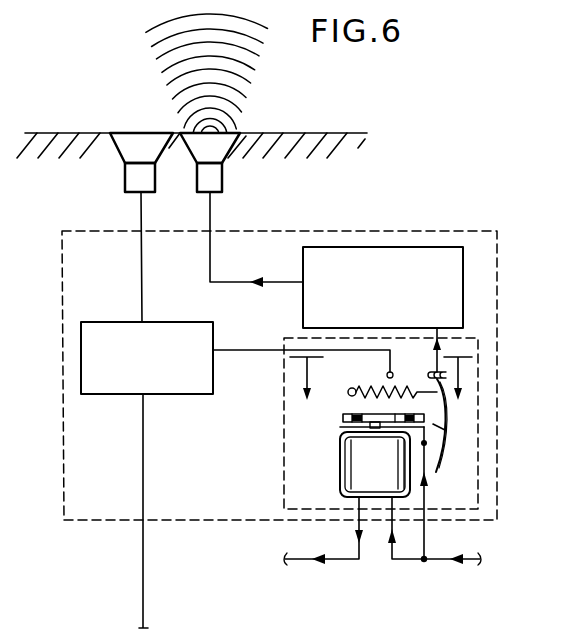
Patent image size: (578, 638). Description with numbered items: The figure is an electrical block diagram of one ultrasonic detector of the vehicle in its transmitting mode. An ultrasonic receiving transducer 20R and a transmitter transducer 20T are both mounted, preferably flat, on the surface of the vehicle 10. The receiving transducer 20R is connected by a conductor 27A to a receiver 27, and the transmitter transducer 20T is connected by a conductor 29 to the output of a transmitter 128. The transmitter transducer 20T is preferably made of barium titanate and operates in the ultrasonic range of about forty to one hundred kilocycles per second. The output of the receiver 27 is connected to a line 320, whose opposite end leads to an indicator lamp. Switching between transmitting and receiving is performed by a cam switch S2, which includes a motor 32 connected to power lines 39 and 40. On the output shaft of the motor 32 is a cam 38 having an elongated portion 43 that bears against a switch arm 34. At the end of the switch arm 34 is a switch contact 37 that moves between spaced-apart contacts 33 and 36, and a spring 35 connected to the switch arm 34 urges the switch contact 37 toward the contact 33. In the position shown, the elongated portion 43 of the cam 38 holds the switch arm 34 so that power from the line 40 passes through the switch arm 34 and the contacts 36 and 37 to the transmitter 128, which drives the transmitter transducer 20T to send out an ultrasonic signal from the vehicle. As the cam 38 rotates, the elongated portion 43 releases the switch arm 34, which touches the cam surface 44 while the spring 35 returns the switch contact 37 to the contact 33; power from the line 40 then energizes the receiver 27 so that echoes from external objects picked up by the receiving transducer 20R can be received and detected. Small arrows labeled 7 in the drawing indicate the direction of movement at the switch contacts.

The vehicle 10 is at (50, 133).
The ultrasonic receiving transducer 20R is at (138, 113).
The transmitter transducer 20T is at (237, 132).
The conductor 27A is at (140, 217).
The conductor 29 is at (210, 222).
The transmitter 128 is at (438, 247).
The receiver 27 is at (81, 344).
The cam switch S2 is at (480, 498).
The contact 33 is at (390, 372).
The direction arrows 7 is at (381, 391).
The spring 35 is at (372, 392).
The switch contact 37 is at (434, 376).
The switch arm 34 is at (440, 446).
The contact 36 is at (443, 430).
The surface 44 is at (360, 416).
The cam 38 is at (341, 427).
The motor 32 is at (355, 462).
The elongated portion 43 is at (437, 470).
The power line 39 is at (334, 559).
The power line 40 is at (405, 559).
The line 320 is at (143, 575).